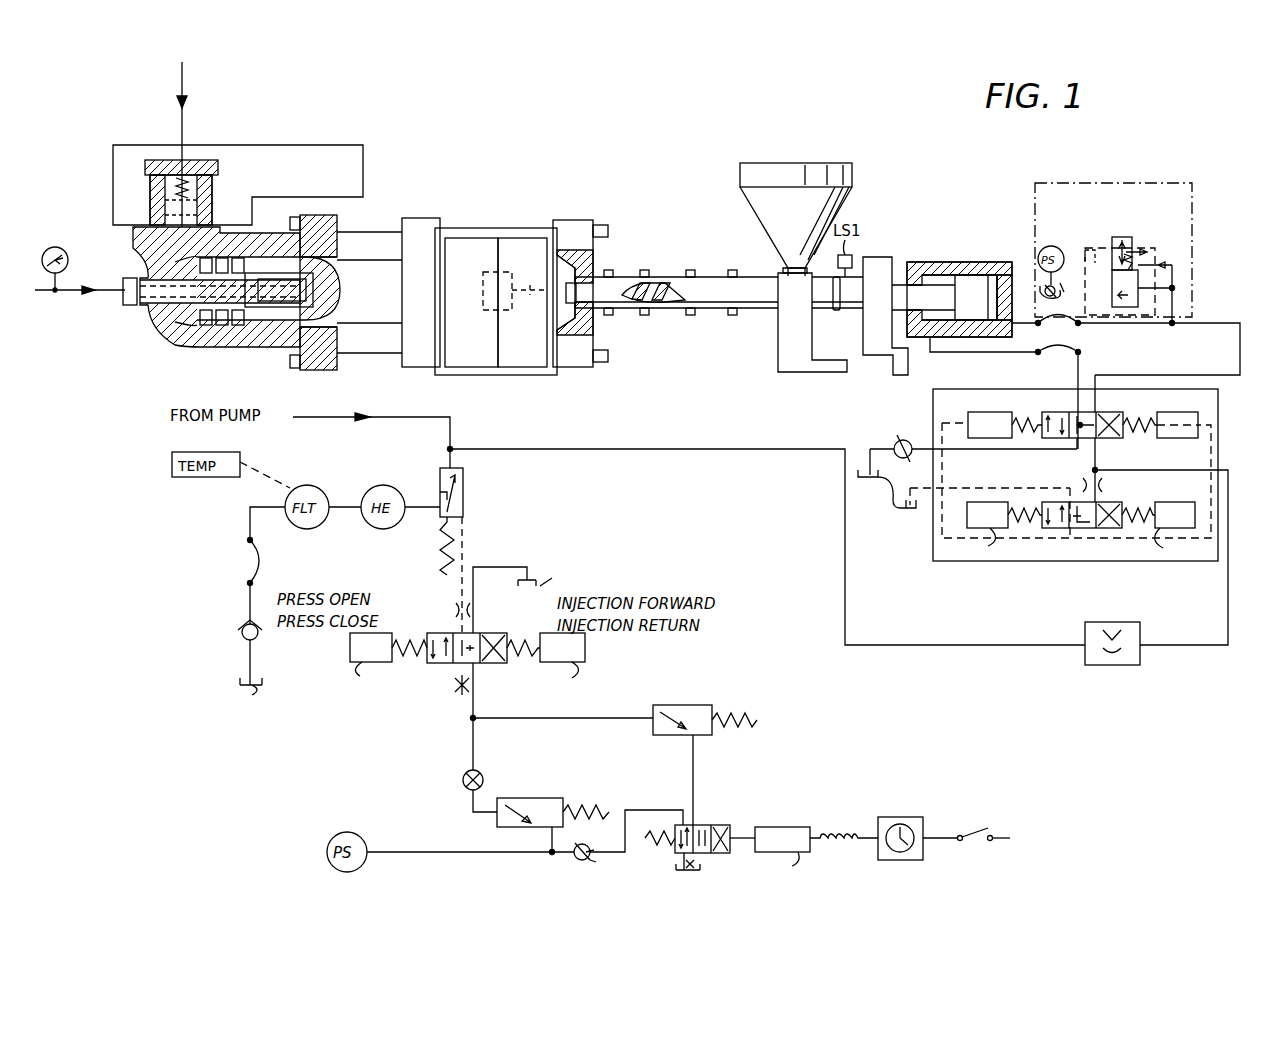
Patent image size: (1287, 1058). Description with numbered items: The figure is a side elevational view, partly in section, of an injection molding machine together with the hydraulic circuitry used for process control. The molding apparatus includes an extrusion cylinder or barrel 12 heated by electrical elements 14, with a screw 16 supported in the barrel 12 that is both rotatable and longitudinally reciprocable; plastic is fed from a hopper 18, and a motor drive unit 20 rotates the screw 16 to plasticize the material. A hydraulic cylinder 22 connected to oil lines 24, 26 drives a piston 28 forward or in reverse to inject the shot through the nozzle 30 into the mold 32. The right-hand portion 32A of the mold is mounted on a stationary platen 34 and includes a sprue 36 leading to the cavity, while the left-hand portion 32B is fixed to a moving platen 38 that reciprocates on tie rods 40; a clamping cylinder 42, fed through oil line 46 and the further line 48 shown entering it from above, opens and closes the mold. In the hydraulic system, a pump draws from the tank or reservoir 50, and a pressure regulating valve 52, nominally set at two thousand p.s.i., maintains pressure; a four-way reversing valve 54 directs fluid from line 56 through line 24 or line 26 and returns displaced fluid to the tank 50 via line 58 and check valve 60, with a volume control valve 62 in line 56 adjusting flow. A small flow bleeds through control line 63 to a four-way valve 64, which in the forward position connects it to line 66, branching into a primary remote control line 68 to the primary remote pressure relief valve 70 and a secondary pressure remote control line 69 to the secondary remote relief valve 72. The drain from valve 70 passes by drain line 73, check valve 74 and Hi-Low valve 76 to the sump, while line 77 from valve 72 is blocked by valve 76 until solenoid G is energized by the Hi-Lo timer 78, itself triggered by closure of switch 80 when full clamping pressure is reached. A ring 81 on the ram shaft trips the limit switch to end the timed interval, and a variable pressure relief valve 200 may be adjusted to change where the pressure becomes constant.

The extrusion cylinder or barrel 12 is at (745, 300).
The electrical elements 14 is at (732, 268).
The screw 16 is at (668, 312).
The hopper 18 is at (848, 210).
The motor drive unit 20 is at (885, 257).
The hydraulic cylinder 22 is at (970, 275).
The oil line 24 is at (1025, 328).
The oil line 26 is at (1000, 352).
The piston 28 is at (985, 275).
The nozzle 30 is at (598, 285).
The mold 32 is at (498, 367).
The right-hand portion of the mold 32A is at (535, 238).
The left-hand portion of the mold 32B is at (470, 238).
The stationary platen 34 is at (593, 225).
The sprue 36 is at (530, 300).
The moving platen 38 is at (440, 215).
The tie rods 40 is at (393, 215).
The clamping cylinder 42 is at (215, 345).
The oil line 46 is at (70, 300).
The fluid inlet line 48 is at (184, 122).
The tank or reservoir 50 is at (1075, 290).
The pressure regulating valve 52 is at (440, 470).
The 4-way hydraulic reversing valve 54 is at (1075, 560).
The line 56 is at (690, 440).
The line 58 is at (912, 449).
The check valve 60 is at (893, 442).
The volume control valve 62 is at (1120, 665).
The control line 63 is at (463, 535).
The 4-way valve 64 is at (500, 633).
The line 66 is at (480, 698).
The primary remote control line 68 is at (470, 758).
The secondary pressure remote control line 69 is at (612, 715).
The primary remote pressure relief valve 70 is at (548, 798).
The secondary remote pressure relief valve 72 is at (702, 705).
The drain line 73 is at (535, 841).
The check valve 74 is at (588, 845).
The Hi-Low valve 76 is at (733, 825).
The line 77 is at (700, 752).
The Hi-Lo timer 78 is at (898, 817).
The switch 80 is at (57, 247).
The ring 81 is at (838, 312).
The variable pressure relief valve 200 is at (1125, 215).